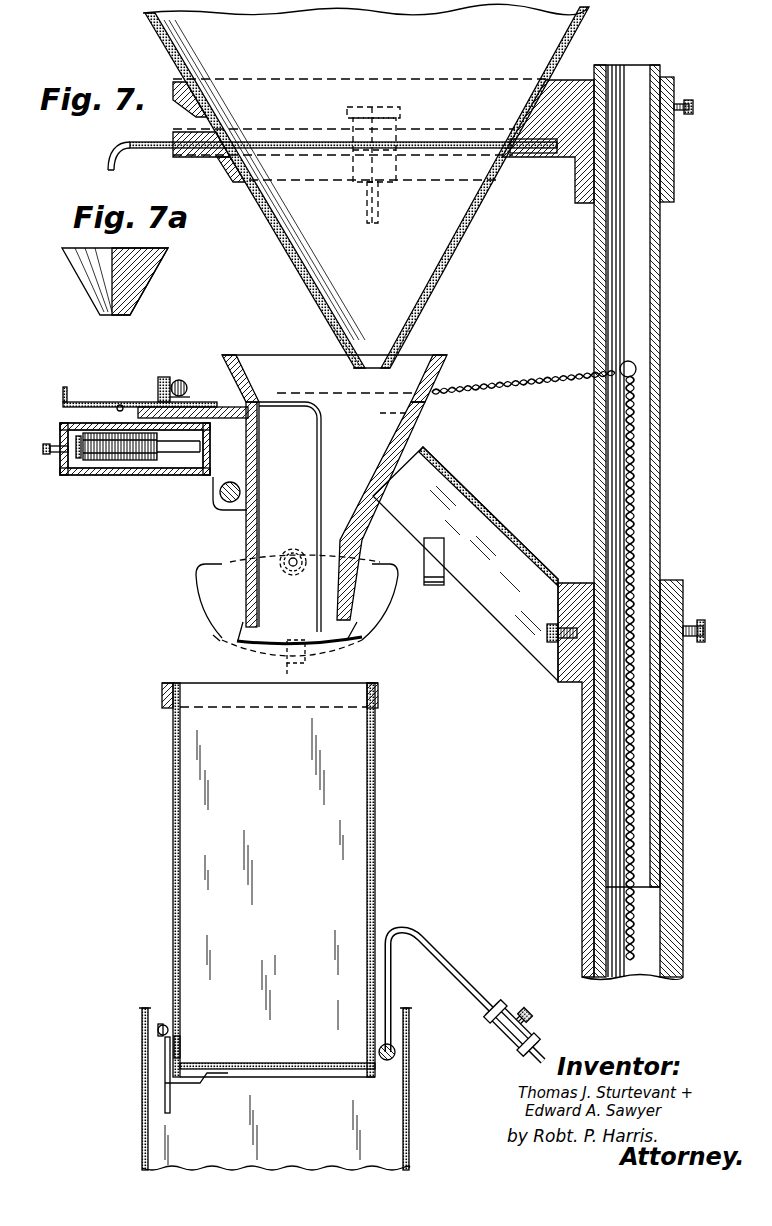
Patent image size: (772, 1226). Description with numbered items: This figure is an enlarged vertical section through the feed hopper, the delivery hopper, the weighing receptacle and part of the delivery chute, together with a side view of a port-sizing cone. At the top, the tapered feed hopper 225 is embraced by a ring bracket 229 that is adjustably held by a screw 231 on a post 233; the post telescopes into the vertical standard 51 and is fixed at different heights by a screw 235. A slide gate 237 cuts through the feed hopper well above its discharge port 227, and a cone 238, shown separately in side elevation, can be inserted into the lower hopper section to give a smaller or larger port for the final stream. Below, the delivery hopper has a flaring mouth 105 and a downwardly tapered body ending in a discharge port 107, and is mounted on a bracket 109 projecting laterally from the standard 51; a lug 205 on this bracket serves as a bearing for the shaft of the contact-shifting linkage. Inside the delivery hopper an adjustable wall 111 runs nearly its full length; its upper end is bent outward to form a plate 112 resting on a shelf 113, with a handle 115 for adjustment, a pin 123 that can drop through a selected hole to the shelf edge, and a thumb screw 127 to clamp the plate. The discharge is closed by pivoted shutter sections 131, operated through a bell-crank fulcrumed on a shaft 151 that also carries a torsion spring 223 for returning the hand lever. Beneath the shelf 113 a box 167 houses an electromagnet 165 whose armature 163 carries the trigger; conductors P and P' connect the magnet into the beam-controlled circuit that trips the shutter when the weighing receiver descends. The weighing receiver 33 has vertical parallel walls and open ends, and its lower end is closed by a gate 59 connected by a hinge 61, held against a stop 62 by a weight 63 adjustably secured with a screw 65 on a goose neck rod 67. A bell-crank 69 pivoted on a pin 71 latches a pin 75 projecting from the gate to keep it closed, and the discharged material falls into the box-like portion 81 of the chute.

In FIG. 7, the feed hopper 225 is at (276, 229).
In FIG. 7, the ring bracket 229 is at (198, 108).
In FIG. 7, the slide gate 237 is at (447, 139).
In FIG. 7, the cone 238 is at (347, 308).
In FIG. 7A, the cone 238 is at (142, 283).
In FIG. 7, the post 233 is at (659, 380).
In FIG. 7, the conductor P is at (651, 521).
In FIG. 7, the conductor P' is at (565, 665).
In FIG. 7, the screw 231 is at (690, 108).
In FIG. 7, the vertical standard 51 is at (582, 718).
In FIG. 7, the screw 235 is at (703, 624).
In FIG. 7, the flaring mouth 105 is at (277, 350).
In FIG. 7, the discharge port 227 is at (375, 356).
In FIG. 7, the handle 115 is at (72, 394).
In FIG. 7, the shelf 113 is at (257, 436).
In FIG. 7, the adjustable wall 111 is at (321, 455).
In FIG. 7, the box 167 is at (62, 430).
In FIG. 7, the electromagnet 165 is at (125, 465).
In FIG. 7, the armature 163 is at (55, 460).
In FIG. 7, the pin 123 is at (160, 380).
In FIG. 7, the thumb screw 127 is at (181, 388).
In FIG. 7, the plate 112 is at (121, 405).
In FIG. 7, the torsion spring 223 is at (220, 490).
In FIG. 7, the shaft 151 is at (220, 502).
In FIG. 7, the shutter sections 131 is at (200, 604).
In FIG. 7, the discharge port 107 is at (287, 620).
In FIG. 7, the bracket 109 is at (487, 500).
In FIG. 7, the lug 205 is at (440, 587).
In FIG. 7, the weighing receiver 33 is at (377, 805).
In FIG. 7, the gate 59 is at (303, 1070).
In FIG. 7, the box-like portion 81 is at (409, 1110).
In FIG. 7, the goose neck rod 67 is at (448, 963).
In FIG. 7, the weight 63 is at (505, 1007).
In FIG. 7, the screw 65 is at (537, 1017).
In FIG. 7, the hinge 61 is at (396, 1053).
In FIG. 7, the bell-crank 69 is at (173, 1030).
In FIG. 7, the pin 71 is at (158, 1030).
In FIG. 7, the stop 62 is at (185, 1058).
In FIG. 7, the pin 75 is at (183, 1087).